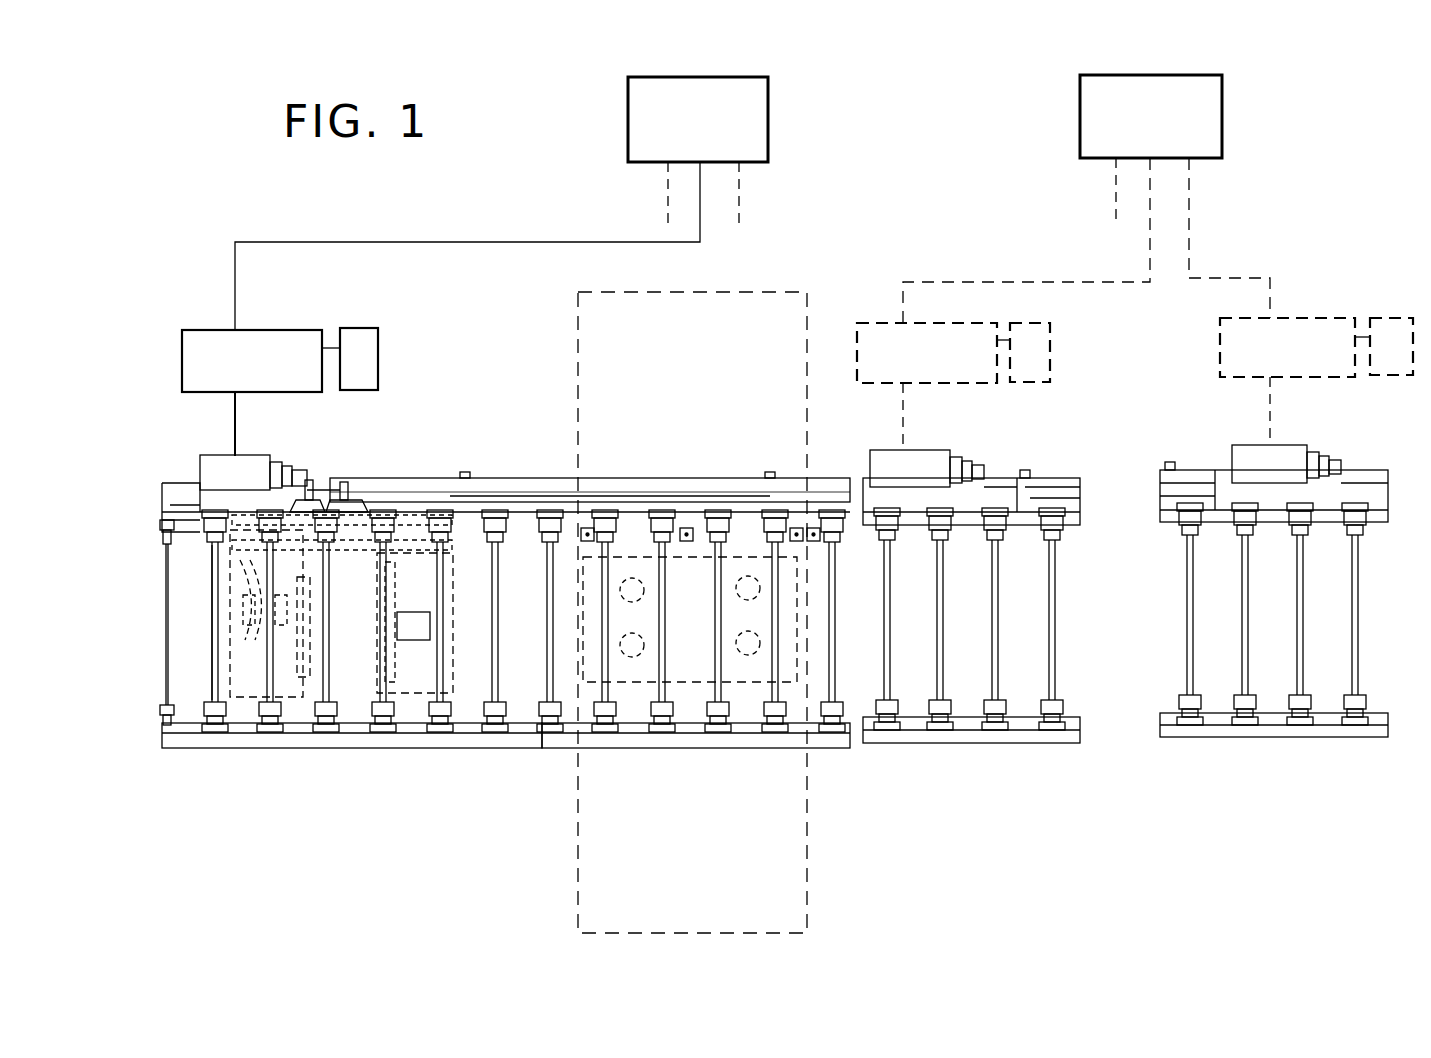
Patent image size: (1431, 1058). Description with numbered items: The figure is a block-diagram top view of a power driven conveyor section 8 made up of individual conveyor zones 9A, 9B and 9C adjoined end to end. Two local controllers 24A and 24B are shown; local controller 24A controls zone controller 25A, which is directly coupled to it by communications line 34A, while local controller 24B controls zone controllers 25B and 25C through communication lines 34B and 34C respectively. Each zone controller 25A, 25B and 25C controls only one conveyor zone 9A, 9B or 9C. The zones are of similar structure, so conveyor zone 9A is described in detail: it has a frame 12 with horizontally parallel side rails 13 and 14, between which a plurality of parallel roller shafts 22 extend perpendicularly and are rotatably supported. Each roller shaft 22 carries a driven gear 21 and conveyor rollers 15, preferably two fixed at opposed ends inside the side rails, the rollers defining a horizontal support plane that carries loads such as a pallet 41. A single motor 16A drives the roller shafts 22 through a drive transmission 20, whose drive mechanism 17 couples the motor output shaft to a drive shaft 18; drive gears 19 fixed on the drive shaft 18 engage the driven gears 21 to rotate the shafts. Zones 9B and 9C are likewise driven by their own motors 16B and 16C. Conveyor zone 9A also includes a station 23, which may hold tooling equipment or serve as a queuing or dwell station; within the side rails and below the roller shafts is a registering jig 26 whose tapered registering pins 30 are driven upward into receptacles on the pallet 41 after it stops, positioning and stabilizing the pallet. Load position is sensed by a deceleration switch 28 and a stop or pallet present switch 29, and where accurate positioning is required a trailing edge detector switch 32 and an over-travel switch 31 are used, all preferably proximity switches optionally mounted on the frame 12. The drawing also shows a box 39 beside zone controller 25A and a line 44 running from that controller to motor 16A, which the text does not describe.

The power driven conveyor section 8 is at (122, 182).
The conveyor zone 9A is at (478, 635).
The conveyor zone 9B is at (971, 630).
The conveyor zone 9C is at (1274, 627).
The frame 12 is at (262, 752).
The side rail 13 is at (540, 750).
The side rail 14 is at (497, 510).
The conveyor roller 15 is at (716, 520).
The motor 16A is at (202, 458).
The motor 16B is at (910, 450).
The motor 16C is at (1268, 450).
The drive mechanism 17 is at (313, 480).
The drive shaft 18 is at (162, 519).
The drive gear 19 is at (350, 480).
The drive transmission 20 is at (165, 497).
The driven gear 21 is at (204, 535).
The roller shaft 22 is at (210, 583).
The station 23 is at (578, 345).
The local controller 24A is at (768, 146).
The local controller 24B is at (1222, 118).
The zone controller 25A is at (183, 330).
The zone controller 25B is at (880, 322).
The zone controller 25C is at (1220, 362).
The registering jig 26 is at (622, 560).
The deceleration switch 28 is at (688, 545).
The stop switch 29 is at (812, 545).
The registering pin 30 is at (629, 702).
The over-travel switch 31 is at (800, 545).
The trailing edge detector switch 32 is at (588, 543).
The communications line 34A is at (410, 242).
The communication line 34B is at (962, 282).
The communication line 34C is at (1218, 278).
The input/output module 39 is at (380, 348).
The pallet 41 is at (258, 645).
The motor control line 44 is at (236, 426).